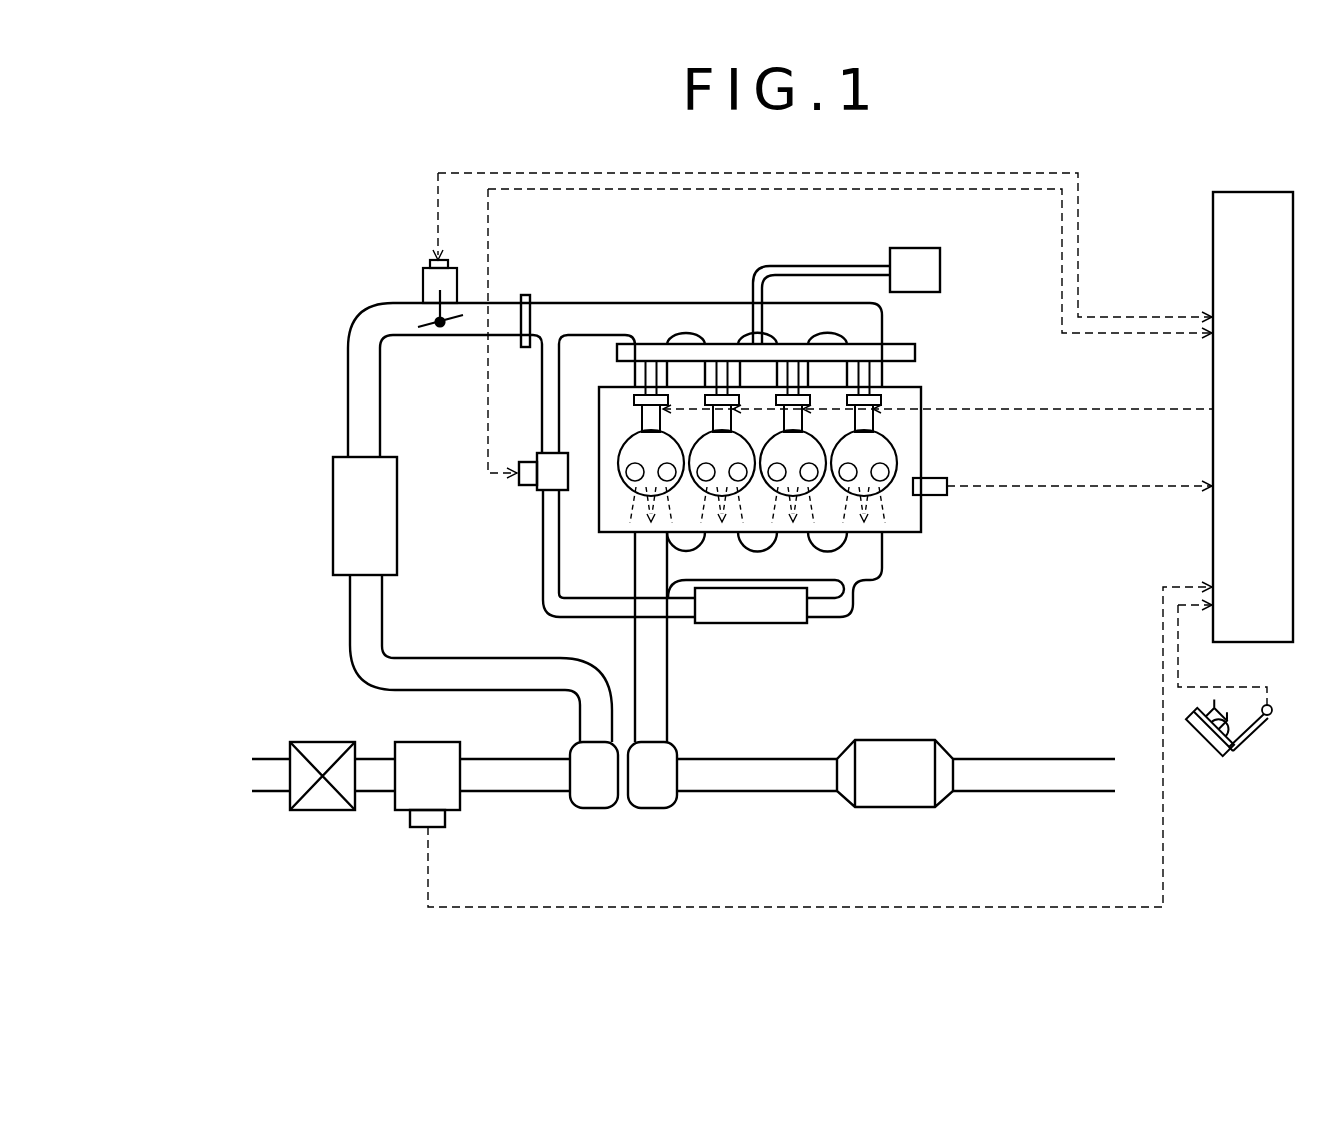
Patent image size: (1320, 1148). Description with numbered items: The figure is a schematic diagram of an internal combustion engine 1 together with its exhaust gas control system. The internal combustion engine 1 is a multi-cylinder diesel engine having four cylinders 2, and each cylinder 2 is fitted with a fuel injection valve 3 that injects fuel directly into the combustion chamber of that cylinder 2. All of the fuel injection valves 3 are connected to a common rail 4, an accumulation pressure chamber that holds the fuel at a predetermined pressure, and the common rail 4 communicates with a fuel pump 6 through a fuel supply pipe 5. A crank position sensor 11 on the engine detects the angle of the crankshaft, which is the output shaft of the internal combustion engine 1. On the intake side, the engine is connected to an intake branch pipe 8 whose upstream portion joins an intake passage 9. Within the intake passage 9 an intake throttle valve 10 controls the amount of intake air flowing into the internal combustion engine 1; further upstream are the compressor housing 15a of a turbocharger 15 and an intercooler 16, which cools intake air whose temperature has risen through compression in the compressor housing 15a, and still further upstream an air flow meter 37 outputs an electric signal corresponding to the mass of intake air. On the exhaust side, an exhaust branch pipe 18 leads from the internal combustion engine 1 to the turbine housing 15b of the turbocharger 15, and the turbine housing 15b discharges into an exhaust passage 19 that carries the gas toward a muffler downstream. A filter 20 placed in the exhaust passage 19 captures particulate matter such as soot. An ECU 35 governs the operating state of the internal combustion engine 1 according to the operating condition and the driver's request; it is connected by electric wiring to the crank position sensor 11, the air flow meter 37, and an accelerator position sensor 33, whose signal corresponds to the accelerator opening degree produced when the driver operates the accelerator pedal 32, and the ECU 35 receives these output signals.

The internal combustion engine 1 is at (901, 545).
The cylinder 2 is at (887, 438).
The fuel injection valve 3 is at (640, 424).
The common rail 4 is at (900, 361).
The fuel supply pipe 5 is at (805, 266).
The fuel pump 6 is at (890, 260).
The intake branch pipe 8 is at (560, 303).
The intake passage 9 is at (382, 414).
The intake throttle valve 10 is at (425, 328).
The crank position sensor 11 is at (947, 480).
The turbocharger 15 is at (609, 820).
The compressor housing 15a is at (587, 808).
The turbine housing 15b is at (641, 798).
The intercooler 16 is at (333, 517).
The exhaust branch pipe 18 is at (635, 647).
The exhaust passage 19 is at (683, 793).
The filter 20 is at (893, 740).
The accelerator pedal 32 is at (1210, 757).
The accelerator position sensor 33 is at (1271, 717).
The ECU 35 is at (1253, 643).
The air flow meter 37 is at (403, 812).